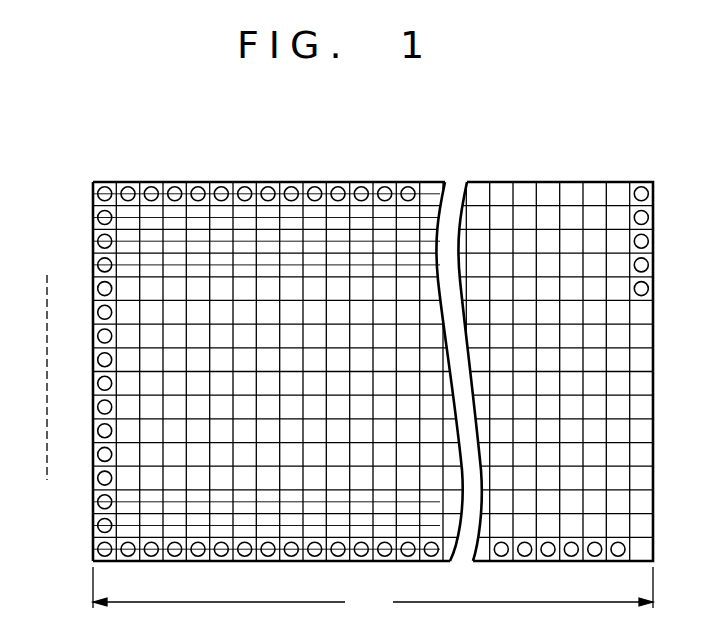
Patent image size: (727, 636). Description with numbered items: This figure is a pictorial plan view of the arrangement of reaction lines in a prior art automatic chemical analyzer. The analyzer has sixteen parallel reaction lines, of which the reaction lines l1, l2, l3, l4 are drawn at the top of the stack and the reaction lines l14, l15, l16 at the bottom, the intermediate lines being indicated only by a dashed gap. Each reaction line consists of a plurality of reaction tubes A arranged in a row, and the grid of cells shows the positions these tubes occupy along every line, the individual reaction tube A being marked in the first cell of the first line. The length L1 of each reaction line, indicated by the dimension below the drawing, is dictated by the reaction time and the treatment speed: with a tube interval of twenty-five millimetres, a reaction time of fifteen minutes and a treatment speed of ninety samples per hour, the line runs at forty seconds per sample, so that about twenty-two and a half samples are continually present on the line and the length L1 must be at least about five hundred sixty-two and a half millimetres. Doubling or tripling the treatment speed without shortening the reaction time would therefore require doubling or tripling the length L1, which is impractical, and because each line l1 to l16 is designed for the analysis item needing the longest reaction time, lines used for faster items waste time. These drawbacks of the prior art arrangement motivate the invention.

The reaction tube A is at (104, 187).
The length of the reaction line L1 is at (373, 589).
The reaction line l1 is at (93, 195).
The reaction line l2 is at (93, 218).
The reaction line l3 is at (93, 242).
The reaction line l4 is at (93, 266).
The reaction line l14 is at (93, 503).
The reaction line l15 is at (93, 526).
The reaction line l16 is at (93, 550).